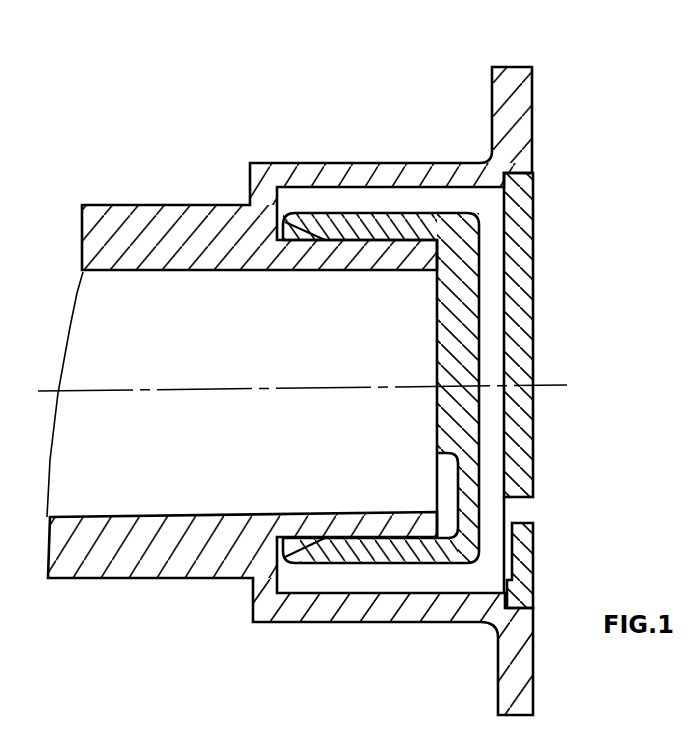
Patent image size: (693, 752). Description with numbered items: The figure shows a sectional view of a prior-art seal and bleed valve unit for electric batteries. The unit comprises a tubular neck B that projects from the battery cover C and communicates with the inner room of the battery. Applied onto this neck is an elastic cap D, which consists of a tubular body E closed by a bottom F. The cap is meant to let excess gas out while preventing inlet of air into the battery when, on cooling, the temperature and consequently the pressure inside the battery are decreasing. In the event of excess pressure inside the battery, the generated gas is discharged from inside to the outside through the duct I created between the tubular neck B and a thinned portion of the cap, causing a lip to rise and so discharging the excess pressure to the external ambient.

The tubular neck B is at (308, 520).
The battery cover C is at (143, 222).
The elastic cap D is at (477, 208).
The tubular body E is at (362, 236).
The bottom F is at (453, 371).
The duct I is at (404, 546).